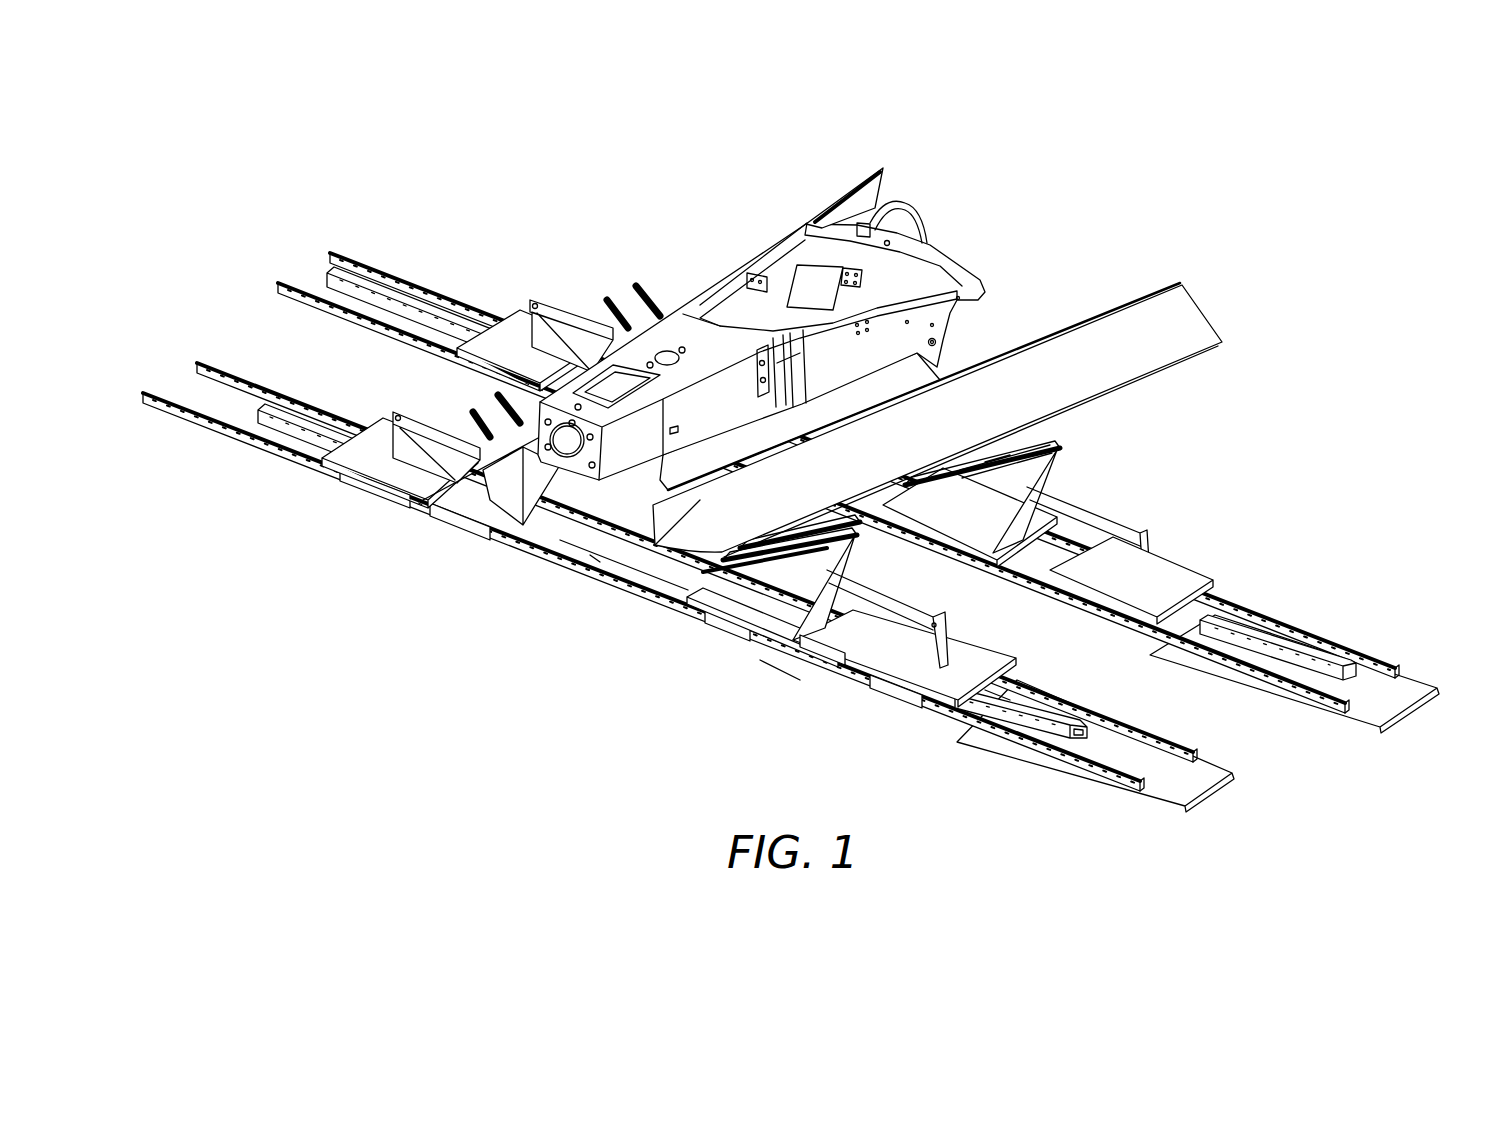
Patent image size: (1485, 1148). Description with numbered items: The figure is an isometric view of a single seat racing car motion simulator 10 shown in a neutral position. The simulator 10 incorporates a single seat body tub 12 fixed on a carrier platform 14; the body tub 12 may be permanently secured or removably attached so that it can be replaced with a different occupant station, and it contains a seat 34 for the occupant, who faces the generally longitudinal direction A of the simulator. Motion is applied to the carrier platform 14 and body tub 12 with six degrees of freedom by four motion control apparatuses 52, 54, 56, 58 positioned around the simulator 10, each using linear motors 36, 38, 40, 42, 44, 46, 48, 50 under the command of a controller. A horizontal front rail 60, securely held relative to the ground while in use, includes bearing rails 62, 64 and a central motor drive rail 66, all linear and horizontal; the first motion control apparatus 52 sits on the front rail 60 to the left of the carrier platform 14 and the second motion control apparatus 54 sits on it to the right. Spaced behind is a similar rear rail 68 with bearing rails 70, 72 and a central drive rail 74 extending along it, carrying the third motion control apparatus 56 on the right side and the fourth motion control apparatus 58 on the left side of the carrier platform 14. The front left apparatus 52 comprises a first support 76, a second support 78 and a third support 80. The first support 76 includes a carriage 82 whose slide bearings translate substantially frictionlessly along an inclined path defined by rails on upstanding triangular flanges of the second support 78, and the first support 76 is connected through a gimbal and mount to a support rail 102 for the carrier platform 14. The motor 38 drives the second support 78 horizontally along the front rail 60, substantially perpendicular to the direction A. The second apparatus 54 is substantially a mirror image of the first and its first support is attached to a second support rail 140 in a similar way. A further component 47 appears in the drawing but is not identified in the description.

The racing car motion simulator 10 is at (462, 595).
The single seat body tub 12 is at (952, 267).
The carrier platform 14 is at (935, 368).
The seat 34 is at (867, 293).
The linear motor 36 is at (1003, 697).
The linear motor 38 is at (827, 637).
The linear motor 40 is at (613, 587).
The linear motor 42 is at (453, 497).
The linear motor 44 is at (472, 316).
The linear motor 46 is at (419, 312).
The track block 47 is at (315, 434).
The linear motor 48 is at (1023, 550).
The linear motor 50 is at (1200, 603).
The first motion control apparatus 52 is at (790, 672).
The second motion control apparatus 54 is at (420, 532).
The third motion control apparatus 56 is at (652, 262).
The fourth motion control apparatus 58 is at (1110, 500).
The front rail 60 is at (1150, 763).
The bearing rail 62 is at (1093, 782).
The bearing rail 64 is at (1180, 740).
The central motor drive rail 66 is at (1073, 715).
The rear rail 68 is at (1357, 690).
The bearing rail 70 is at (1310, 697).
The bearing rail 72 is at (1393, 663).
The central drive rail 74 is at (1313, 647).
The first support 76 is at (800, 552).
The second support 78 is at (763, 620).
The third support 80 is at (922, 680).
The carriage 82 is at (767, 570).
The support rail 102 is at (1197, 315).
The second support rail 140 is at (838, 185).
The generally longitudinal direction A is at (505, 628).